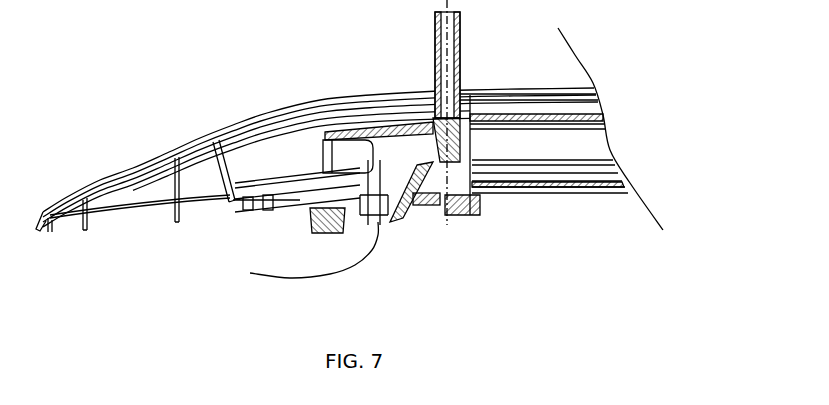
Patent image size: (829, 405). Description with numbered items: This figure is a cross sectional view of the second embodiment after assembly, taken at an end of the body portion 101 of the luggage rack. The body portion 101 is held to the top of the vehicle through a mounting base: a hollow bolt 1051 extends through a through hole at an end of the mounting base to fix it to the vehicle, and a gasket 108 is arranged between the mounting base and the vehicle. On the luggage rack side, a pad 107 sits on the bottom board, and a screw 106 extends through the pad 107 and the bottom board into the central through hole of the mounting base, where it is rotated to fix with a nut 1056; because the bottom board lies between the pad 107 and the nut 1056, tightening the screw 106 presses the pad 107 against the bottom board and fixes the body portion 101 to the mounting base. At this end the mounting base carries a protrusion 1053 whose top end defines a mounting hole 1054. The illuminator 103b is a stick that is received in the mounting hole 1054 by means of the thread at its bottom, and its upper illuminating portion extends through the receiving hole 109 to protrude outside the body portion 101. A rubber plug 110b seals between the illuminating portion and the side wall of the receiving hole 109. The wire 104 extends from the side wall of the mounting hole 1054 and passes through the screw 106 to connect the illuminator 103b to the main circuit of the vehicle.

The body portion 101 is at (270, 111).
The rubber plug 110b is at (433, 98).
The illuminator 103b is at (462, 62).
The receiving hole 109 is at (466, 80).
The mounting hole 1054 is at (470, 137).
The screw 106 is at (372, 177).
The pad 107 is at (249, 203).
The nut 1056 is at (388, 207).
The gasket 108 is at (437, 220).
The wire 104 is at (340, 273).
The protrusion 1053 is at (460, 187).
The hollow bolt 1051 is at (437, 213).